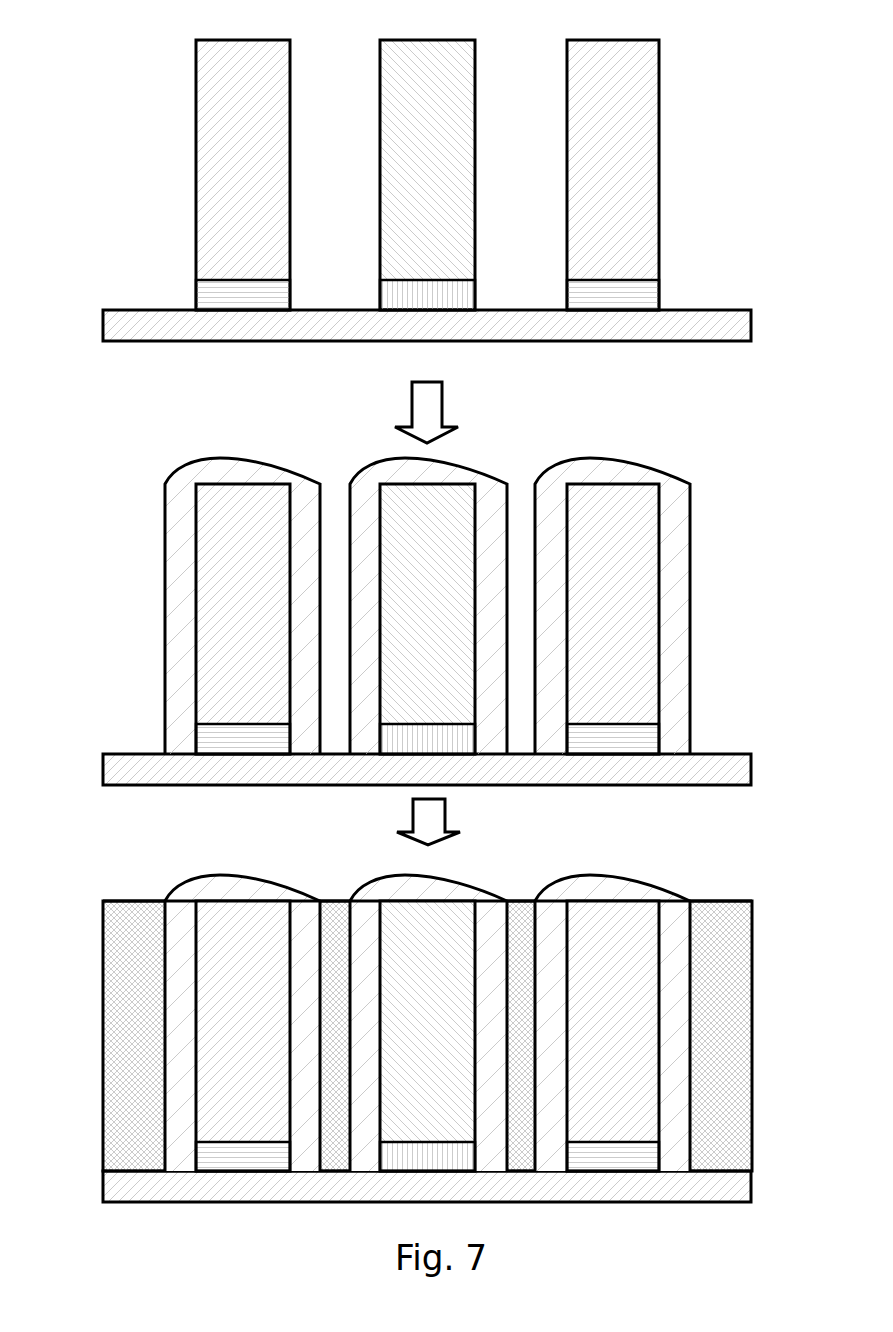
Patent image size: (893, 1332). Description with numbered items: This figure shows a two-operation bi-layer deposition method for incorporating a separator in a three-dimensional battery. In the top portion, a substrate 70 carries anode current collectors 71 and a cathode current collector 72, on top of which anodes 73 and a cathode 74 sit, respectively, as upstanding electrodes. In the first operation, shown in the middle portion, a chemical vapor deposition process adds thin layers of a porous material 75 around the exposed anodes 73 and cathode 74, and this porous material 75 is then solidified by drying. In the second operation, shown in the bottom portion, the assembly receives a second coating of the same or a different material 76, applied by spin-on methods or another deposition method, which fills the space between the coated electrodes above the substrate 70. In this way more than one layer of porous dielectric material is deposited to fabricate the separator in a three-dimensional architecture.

The substrate 70 is at (140, 325).
The anode current collector 71 is at (243, 299).
The cathode current collector 72 is at (458, 298).
The anode 73 is at (218, 108).
The cathode 74 is at (456, 123).
The porous material 75 is at (178, 639).
The second coating material 76 is at (125, 1058).